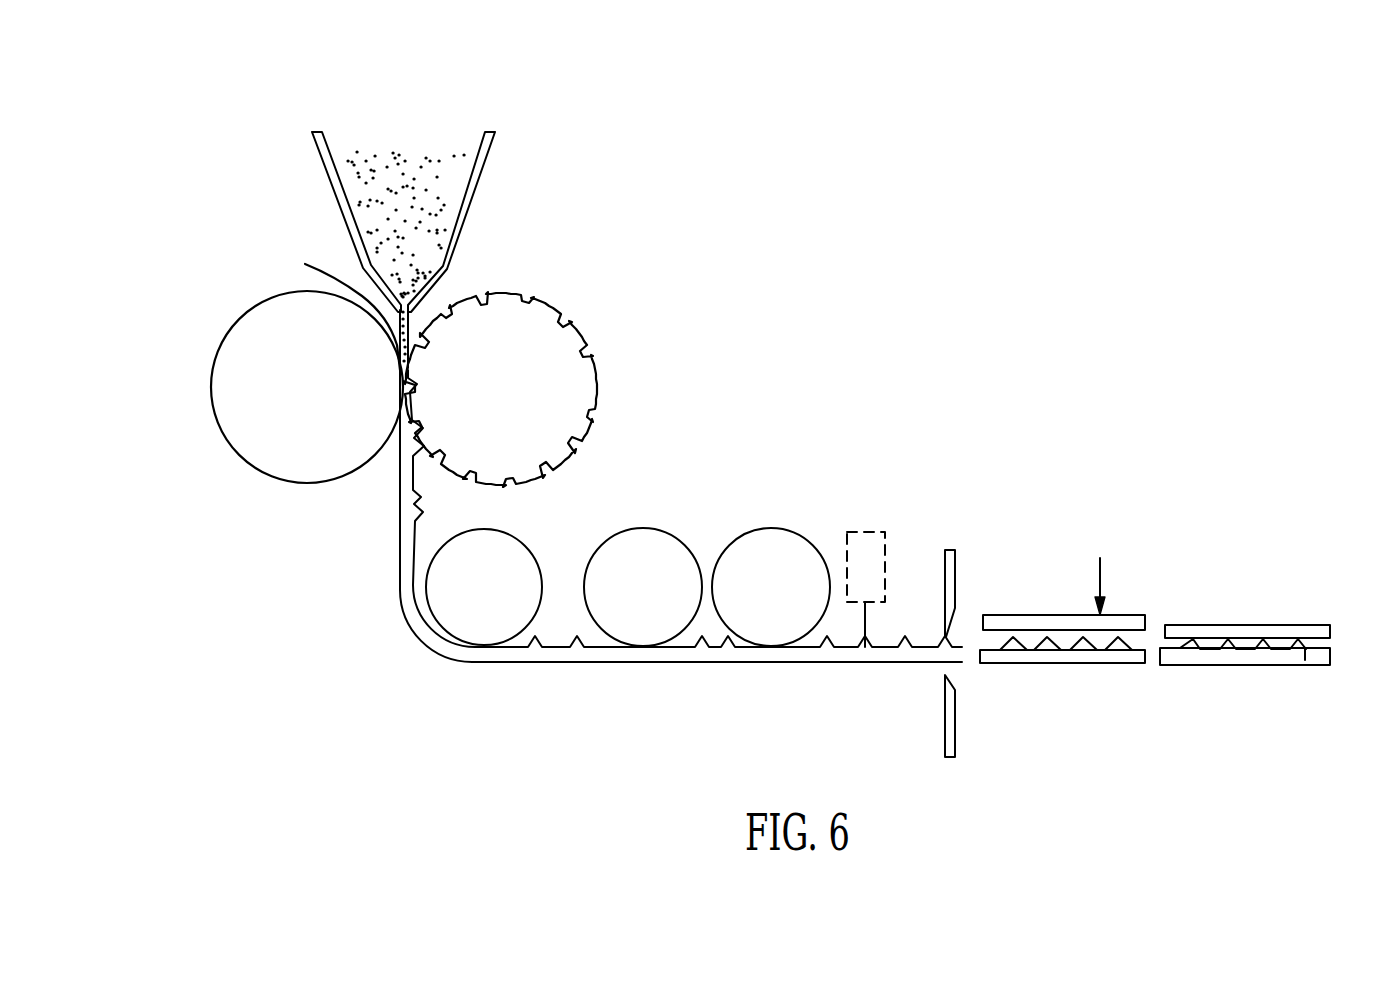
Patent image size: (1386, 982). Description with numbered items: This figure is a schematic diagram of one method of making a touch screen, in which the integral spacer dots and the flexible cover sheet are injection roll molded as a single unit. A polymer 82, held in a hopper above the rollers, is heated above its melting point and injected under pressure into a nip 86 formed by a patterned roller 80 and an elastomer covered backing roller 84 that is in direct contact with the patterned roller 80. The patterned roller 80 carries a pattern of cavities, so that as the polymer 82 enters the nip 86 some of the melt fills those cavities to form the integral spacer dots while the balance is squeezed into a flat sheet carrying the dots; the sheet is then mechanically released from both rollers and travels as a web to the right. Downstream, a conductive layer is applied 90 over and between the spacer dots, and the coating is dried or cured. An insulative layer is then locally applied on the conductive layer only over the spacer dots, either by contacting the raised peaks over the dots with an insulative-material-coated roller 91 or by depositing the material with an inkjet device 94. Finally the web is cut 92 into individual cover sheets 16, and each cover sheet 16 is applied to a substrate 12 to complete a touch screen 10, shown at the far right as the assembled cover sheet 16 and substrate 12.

The touch screen 10 is at (1276, 604).
The substrate 12 is at (1143, 617).
The cover sheet 16 is at (1130, 665).
The patterned roller 80 is at (568, 318).
The polymer 82 is at (412, 163).
The elastomer covered backing roller 84 is at (235, 325).
The nip 86 is at (305, 264).
The conductive layer application 90 is at (648, 529).
The roller 91 is at (785, 529).
The cutting step 92 is at (955, 556).
The inkjet device 94 is at (865, 530).